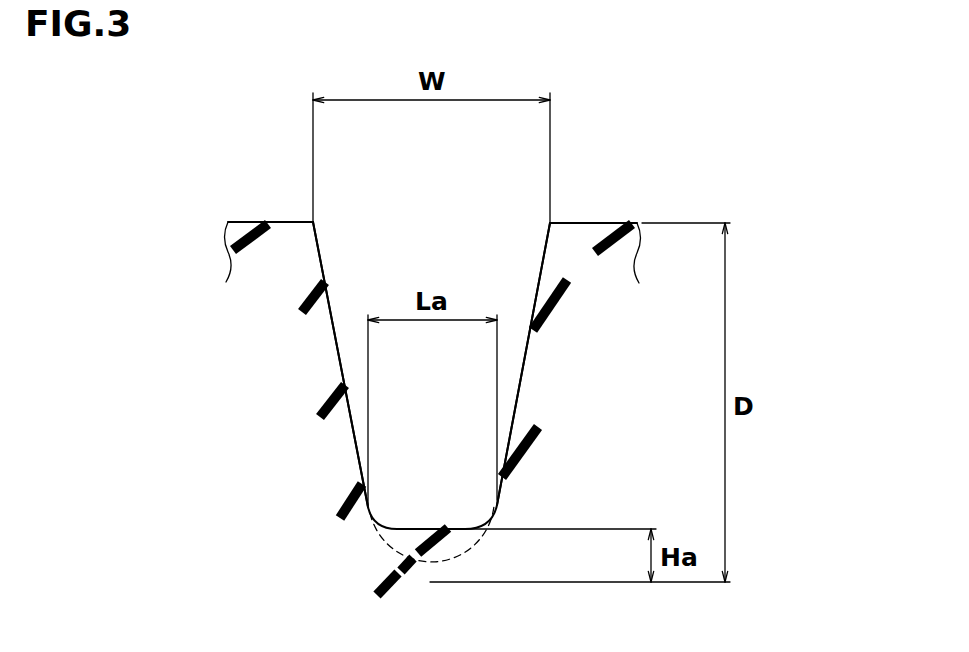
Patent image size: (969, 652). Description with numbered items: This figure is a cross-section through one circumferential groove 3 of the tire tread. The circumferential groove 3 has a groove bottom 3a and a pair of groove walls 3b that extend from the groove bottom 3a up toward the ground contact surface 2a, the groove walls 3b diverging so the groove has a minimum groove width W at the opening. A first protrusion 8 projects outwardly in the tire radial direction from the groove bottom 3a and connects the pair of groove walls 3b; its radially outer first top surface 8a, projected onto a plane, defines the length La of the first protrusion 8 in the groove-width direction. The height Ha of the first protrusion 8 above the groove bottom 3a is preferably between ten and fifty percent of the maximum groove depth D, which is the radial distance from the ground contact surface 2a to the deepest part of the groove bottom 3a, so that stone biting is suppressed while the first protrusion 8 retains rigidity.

The ground contact surface 2a is at (246, 222).
The circumferential groove 3 is at (428, 237).
The groove walls 3b is at (332, 310).
The groove bottom 3a is at (432, 583).
The first protrusion 8 is at (412, 540).
The first top surface 8a is at (425, 529).